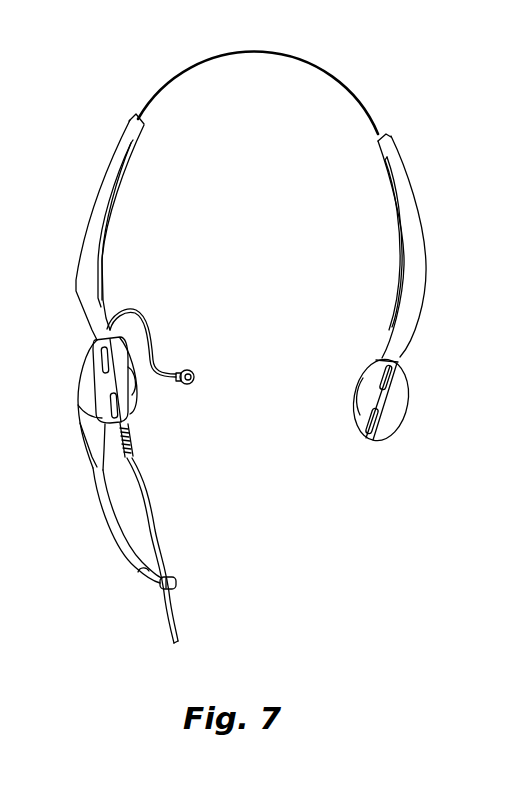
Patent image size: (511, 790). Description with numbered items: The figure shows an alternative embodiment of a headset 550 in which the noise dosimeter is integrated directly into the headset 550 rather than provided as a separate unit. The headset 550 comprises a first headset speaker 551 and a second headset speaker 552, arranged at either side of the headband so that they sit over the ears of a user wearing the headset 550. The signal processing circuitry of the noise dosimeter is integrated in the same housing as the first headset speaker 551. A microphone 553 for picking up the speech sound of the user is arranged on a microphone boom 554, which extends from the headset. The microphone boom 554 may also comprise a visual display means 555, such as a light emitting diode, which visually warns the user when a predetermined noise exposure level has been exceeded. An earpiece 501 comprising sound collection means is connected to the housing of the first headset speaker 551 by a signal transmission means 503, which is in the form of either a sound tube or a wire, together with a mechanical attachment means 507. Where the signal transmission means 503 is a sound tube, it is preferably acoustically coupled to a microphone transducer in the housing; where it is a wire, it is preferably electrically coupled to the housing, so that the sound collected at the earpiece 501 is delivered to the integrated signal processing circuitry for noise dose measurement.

The headset 550 is at (62, 191).
The mechanical attachment means 507 is at (108, 297).
The signal transmission means 503 is at (146, 321).
The earpiece 501 is at (193, 371).
The first headset speaker 551 is at (122, 398).
The second headset speaker 552 is at (363, 442).
The microphone boom 554 is at (110, 521).
The visual display means 555 is at (145, 565).
The microphone 553 is at (178, 584).